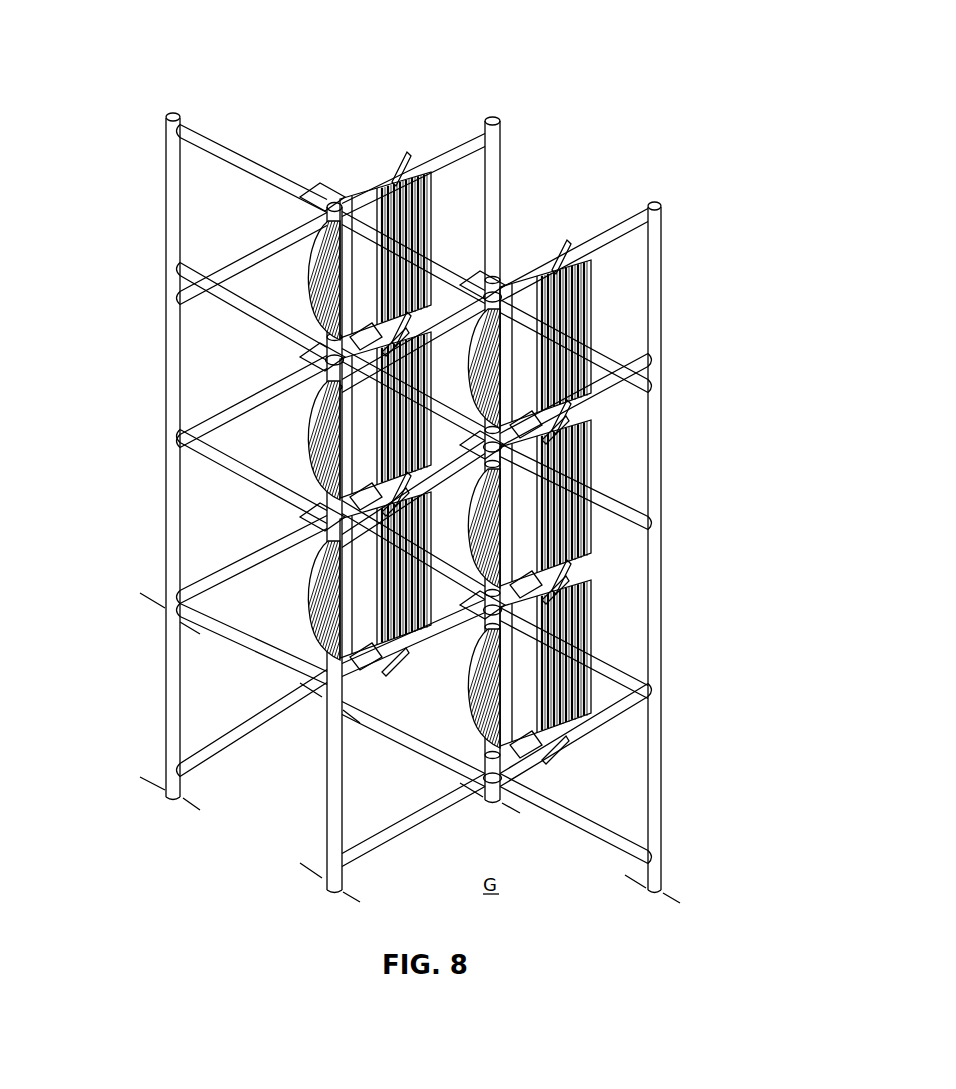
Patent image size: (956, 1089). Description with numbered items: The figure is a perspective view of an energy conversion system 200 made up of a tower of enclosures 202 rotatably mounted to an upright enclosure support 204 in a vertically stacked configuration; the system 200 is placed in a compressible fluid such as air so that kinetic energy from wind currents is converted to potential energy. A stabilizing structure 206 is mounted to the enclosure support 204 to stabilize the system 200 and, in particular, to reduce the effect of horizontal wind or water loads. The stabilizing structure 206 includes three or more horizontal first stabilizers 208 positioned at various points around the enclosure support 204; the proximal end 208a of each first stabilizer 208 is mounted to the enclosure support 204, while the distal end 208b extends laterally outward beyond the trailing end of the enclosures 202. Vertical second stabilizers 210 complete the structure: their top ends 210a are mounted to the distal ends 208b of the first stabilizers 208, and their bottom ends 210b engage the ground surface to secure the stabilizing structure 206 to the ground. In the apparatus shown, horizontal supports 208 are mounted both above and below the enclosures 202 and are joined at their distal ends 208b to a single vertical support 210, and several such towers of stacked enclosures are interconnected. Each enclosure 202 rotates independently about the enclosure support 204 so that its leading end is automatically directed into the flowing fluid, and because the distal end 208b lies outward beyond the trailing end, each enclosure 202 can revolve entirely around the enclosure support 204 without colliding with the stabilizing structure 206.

The energy conversion system 200 is at (427, 453).
The enclosure 202 is at (587, 312).
The enclosure support 204 is at (431, 489).
The stabilizing structure 206 is at (666, 773).
The first stabilizer 208 is at (260, 168).
The proximal end 208a is at (335, 200).
The distal end 208b is at (187, 125).
The second stabilizer 210 is at (166, 441).
The top end 210a is at (166, 297).
The bottom end 210b is at (170, 799).